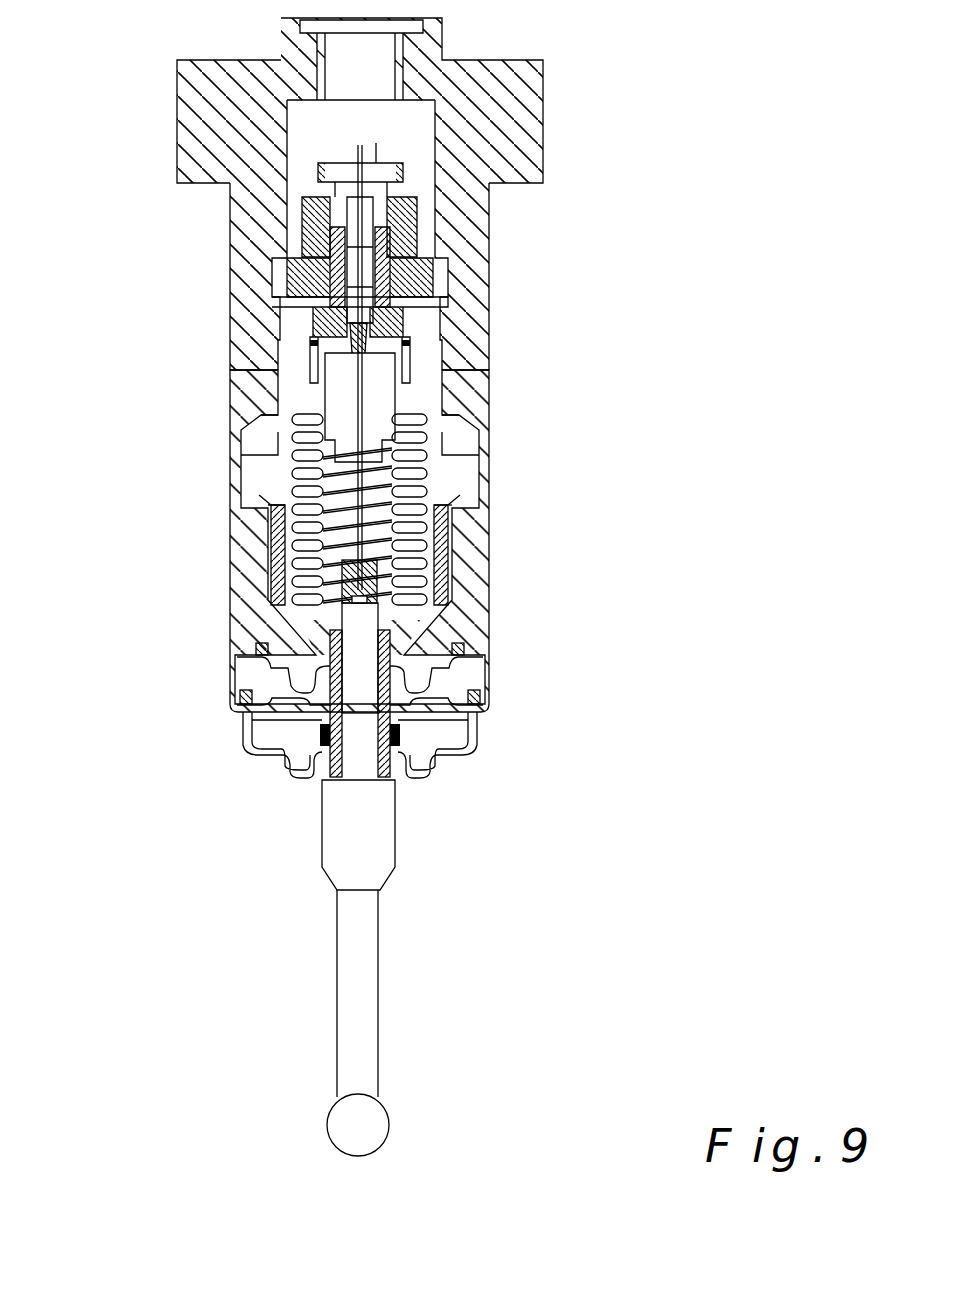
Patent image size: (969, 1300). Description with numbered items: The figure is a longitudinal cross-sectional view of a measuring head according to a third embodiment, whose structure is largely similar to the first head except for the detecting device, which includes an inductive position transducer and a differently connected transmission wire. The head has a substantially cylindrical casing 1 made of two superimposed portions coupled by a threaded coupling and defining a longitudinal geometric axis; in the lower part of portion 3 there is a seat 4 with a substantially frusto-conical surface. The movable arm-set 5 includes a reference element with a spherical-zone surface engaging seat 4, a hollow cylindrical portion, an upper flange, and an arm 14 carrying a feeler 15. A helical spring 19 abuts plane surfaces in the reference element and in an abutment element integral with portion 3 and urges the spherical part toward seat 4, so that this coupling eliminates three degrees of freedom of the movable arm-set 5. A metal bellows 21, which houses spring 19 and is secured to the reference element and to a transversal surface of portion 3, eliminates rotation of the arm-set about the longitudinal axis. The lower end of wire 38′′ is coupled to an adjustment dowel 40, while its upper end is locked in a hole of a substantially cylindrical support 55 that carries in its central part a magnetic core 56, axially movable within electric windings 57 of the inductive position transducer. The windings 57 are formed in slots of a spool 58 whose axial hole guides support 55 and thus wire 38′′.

The casing 1 is at (216, 369).
The casing portion 3 is at (240, 407).
The seat 4 is at (262, 652).
The movable arm-set 5 is at (270, 488).
The arm 14 is at (363, 930).
The feeler 15 is at (372, 1120).
The helical spring 19 is at (428, 560).
The metal bellows 21 is at (425, 490).
The wire 38′′ is at (272, 545).
The adjustment dowel 40 is at (335, 780).
The support 55 is at (440, 335).
The magnetic core 56 is at (362, 250).
The electric windings 57 is at (380, 255).
The spool 58 is at (215, 100).